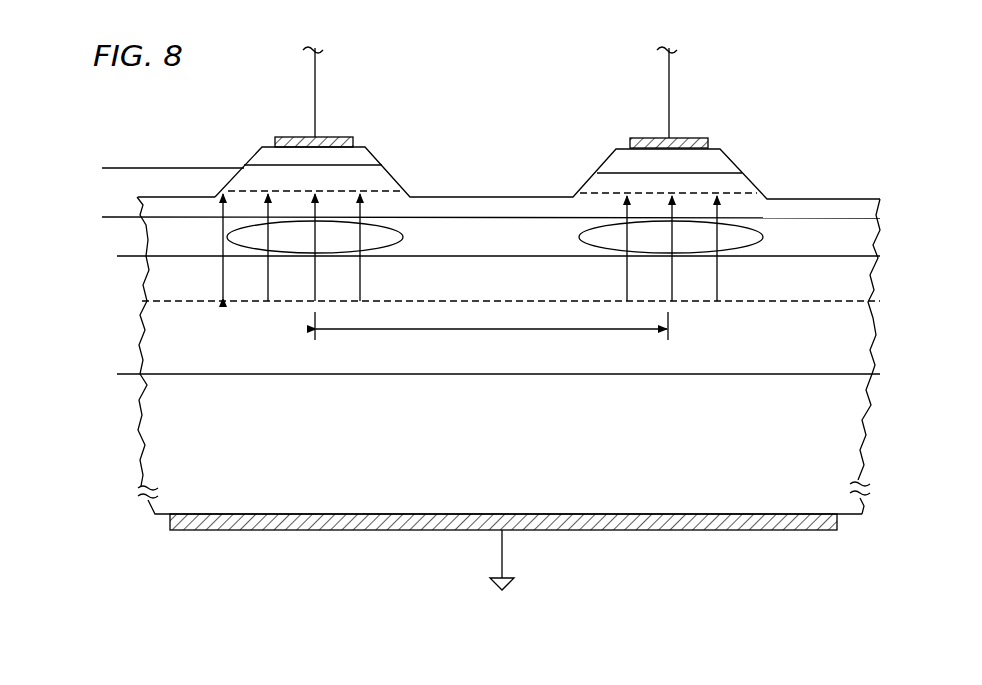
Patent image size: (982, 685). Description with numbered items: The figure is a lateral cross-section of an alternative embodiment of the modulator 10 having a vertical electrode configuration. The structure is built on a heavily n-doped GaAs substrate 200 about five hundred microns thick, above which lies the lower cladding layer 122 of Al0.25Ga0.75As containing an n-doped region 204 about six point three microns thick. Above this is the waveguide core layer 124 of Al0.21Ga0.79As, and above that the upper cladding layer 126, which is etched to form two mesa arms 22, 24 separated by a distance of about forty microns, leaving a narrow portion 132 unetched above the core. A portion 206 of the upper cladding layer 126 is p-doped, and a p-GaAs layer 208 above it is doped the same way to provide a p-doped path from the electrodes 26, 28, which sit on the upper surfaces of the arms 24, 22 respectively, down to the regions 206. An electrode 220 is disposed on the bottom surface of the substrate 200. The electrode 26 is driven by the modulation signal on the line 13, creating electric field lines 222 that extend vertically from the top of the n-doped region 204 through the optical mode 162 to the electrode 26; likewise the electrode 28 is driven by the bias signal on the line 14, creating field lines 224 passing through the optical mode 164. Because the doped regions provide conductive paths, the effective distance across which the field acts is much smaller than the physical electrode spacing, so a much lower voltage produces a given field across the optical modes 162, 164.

The modulator 10 is at (145, 138).
The line 13 is at (315, 78).
The line 14 is at (669, 78).
The mesa arm 22 is at (751, 172).
The mesa arm 24 is at (399, 170).
The electrode 26 is at (283, 137).
The electrode 28 is at (636, 138).
The lower cladding layer 122 is at (115, 256).
The waveguide core layer 124 is at (163, 240).
The upper cladding layer 126 is at (100, 168).
The narrow portion 132 is at (153, 207).
The optical mode 162 is at (366, 252).
The optical mode 164 is at (763, 238).
The substrate 200 is at (163, 437).
The n-doped region 204 is at (163, 341).
The p-doped portion 206 is at (240, 178).
The p-GaAs layer 208 is at (262, 155).
The electrode 220 is at (233, 530).
The electric field lines 222 is at (268, 272).
The electric field lines 224 is at (718, 272).